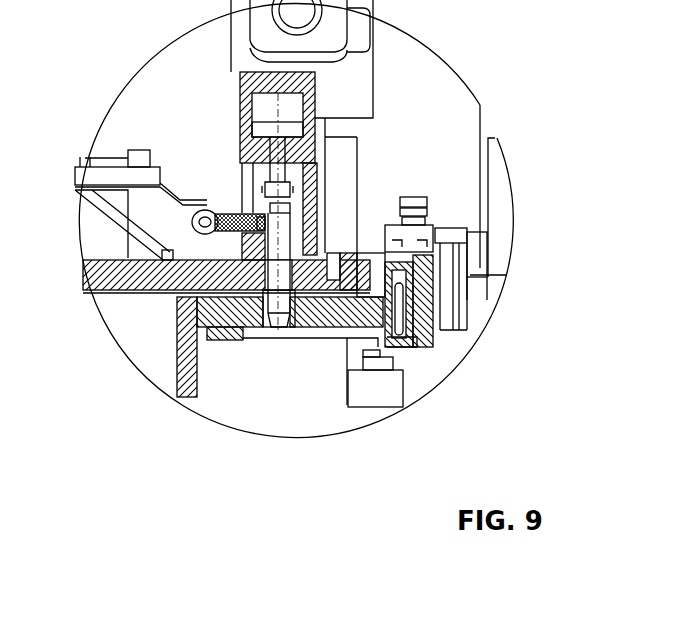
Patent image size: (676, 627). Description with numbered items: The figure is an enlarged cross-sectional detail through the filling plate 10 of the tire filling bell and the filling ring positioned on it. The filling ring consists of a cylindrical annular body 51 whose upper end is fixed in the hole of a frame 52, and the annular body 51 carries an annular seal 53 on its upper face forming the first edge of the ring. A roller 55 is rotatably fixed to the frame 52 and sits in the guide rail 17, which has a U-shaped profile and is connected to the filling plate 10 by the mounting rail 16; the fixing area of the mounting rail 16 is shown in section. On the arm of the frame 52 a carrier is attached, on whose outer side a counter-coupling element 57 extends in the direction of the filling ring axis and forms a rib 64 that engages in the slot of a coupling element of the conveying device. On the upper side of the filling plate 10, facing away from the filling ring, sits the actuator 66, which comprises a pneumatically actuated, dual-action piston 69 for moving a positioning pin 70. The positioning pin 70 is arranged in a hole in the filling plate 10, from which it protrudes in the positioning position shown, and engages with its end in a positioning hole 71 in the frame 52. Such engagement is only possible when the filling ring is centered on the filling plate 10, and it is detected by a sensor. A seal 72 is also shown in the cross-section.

The filling plate 10 is at (98, 268).
The mounting rail 16 is at (379, 250).
The guide rail 17 is at (447, 300).
The annular body 51 is at (183, 397).
The frame 52 is at (332, 340).
The annular seal 53 is at (177, 317).
The roller 55 is at (407, 365).
The counter-coupling element 57 is at (463, 298).
The rib 64 is at (447, 308).
The actuator 66 is at (240, 108).
The piston 69 is at (288, 127).
The positioning pin 70 is at (273, 315).
The positioning hole 71 is at (286, 318).
The seal 72 is at (207, 212).